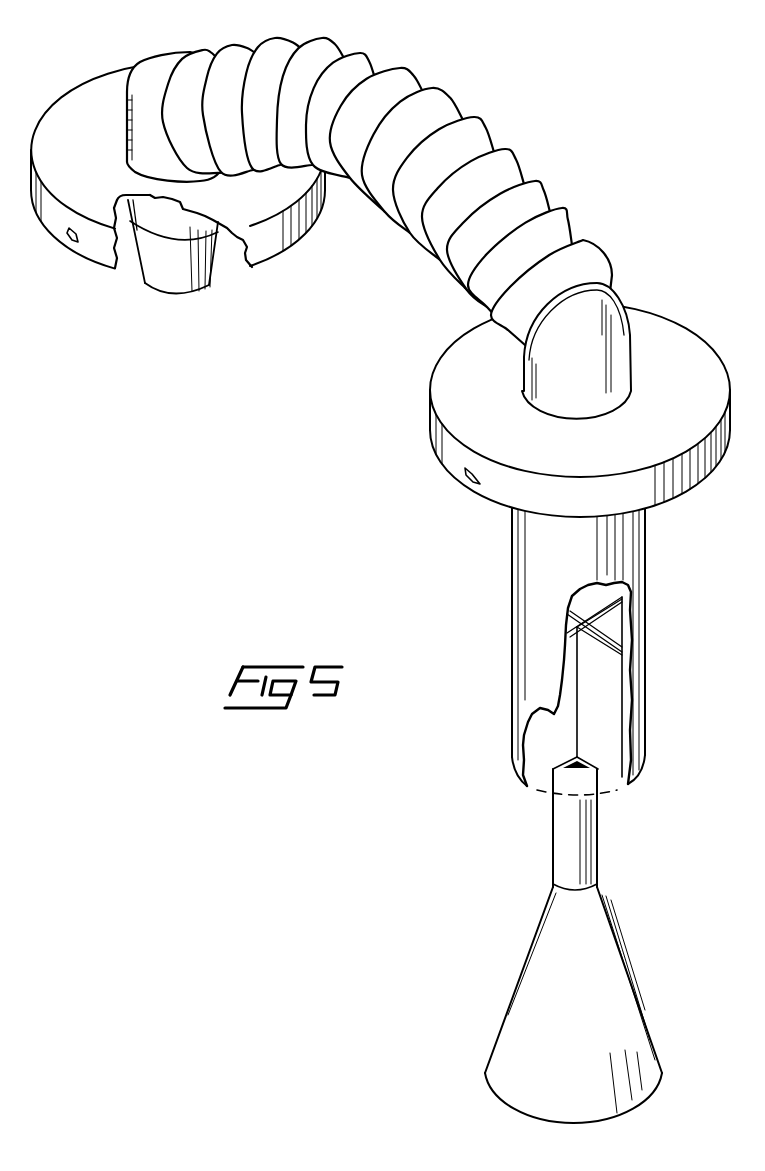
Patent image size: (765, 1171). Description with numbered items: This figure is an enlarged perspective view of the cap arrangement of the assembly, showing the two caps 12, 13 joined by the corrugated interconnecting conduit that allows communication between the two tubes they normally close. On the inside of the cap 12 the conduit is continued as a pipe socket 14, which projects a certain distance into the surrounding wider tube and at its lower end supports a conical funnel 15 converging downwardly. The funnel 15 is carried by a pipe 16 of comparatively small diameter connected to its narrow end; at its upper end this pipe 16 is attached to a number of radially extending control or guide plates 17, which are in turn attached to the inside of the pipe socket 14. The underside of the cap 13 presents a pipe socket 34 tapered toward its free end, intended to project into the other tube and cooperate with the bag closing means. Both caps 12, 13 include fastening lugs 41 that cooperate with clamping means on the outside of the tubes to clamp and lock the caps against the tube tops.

The cap 12 is at (657, 318).
The cap 13 is at (94, 83).
The pipe socket 14 is at (520, 616).
The conical funnel 15 is at (523, 985).
The pipe 16 is at (587, 847).
The control or guide plates 17 is at (597, 618).
The pipe socket 34 is at (180, 287).
The fastening lugs 41 is at (66, 240).